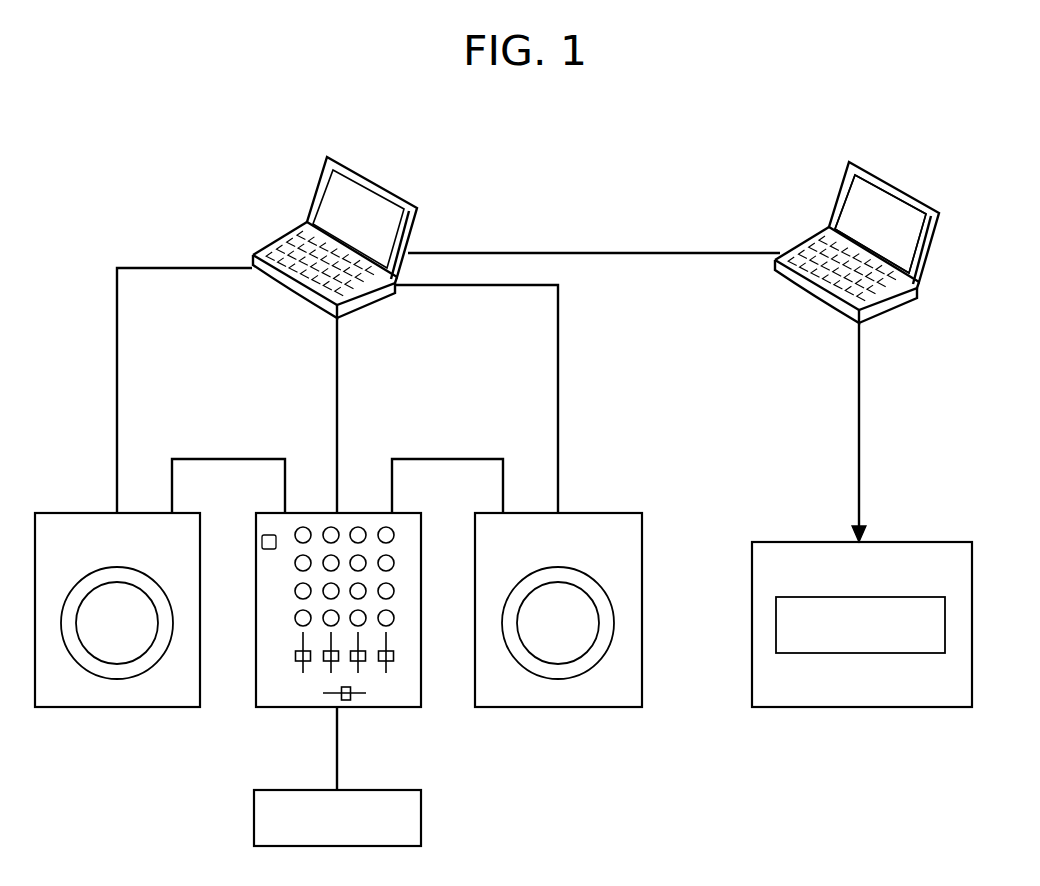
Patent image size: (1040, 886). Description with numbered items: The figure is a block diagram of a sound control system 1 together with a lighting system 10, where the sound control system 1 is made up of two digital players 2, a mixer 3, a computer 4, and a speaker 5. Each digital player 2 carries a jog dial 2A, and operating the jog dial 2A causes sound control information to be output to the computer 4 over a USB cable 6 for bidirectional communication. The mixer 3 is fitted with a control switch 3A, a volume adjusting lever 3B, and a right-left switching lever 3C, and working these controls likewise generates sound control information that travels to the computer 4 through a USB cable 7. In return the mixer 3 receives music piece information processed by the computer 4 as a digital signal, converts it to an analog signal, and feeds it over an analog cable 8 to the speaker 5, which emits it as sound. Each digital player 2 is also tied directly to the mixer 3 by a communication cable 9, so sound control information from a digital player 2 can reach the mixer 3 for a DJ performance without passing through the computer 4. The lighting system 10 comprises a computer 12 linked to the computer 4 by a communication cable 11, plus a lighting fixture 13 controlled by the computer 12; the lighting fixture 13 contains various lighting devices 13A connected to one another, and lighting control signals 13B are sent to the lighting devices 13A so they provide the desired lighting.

The sound control system 1 is at (483, 190).
The digital player 2 is at (145, 513).
The jog dial 2A is at (97, 664).
The mixer 3 is at (371, 513).
The control switch 3A is at (298, 527).
The volume adjusting lever 3B is at (301, 662).
The right-left switching lever 3C is at (340, 700).
The computer 4 is at (367, 203).
The speaker 5 is at (403, 790).
The USB cable 6 is at (118, 352).
The USB cable 7 is at (340, 373).
The analog cable 8 is at (340, 730).
The communication cable 9 is at (245, 459).
The lighting system 10 is at (893, 220).
The communication cable 11 is at (645, 253).
The computer 12 is at (910, 242).
The lighting fixture 13 is at (952, 542).
The lighting device 13A is at (945, 625).
The lighting control signal 13B is at (863, 442).